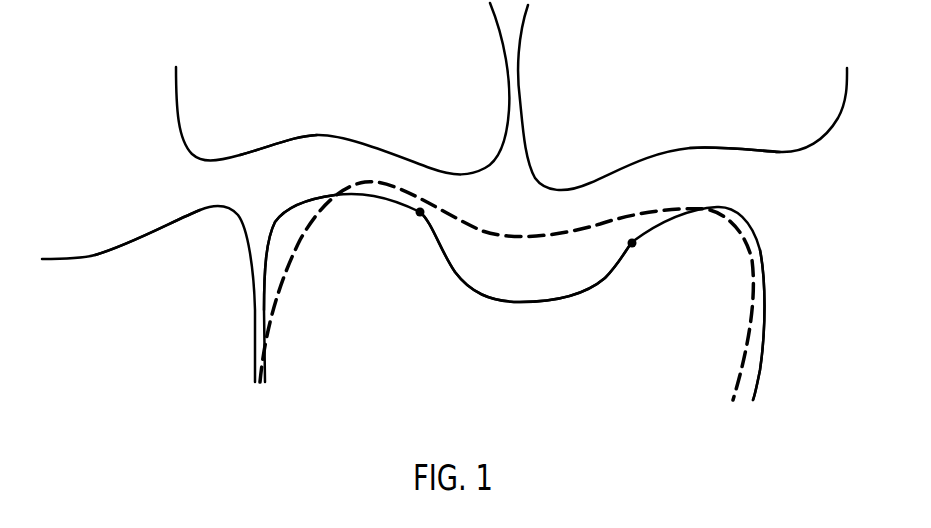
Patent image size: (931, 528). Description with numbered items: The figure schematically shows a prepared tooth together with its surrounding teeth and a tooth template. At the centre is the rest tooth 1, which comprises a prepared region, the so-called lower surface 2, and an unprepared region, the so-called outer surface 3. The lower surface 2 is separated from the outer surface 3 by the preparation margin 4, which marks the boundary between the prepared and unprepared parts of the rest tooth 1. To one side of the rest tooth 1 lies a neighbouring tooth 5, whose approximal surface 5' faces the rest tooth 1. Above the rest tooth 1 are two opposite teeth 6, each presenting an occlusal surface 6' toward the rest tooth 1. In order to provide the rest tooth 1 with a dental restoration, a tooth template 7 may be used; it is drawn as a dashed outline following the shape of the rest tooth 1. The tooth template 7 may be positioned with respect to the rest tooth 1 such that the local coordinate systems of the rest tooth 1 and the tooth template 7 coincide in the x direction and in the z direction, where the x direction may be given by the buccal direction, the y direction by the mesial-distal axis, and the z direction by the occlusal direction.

The rest tooth 1 is at (459, 374).
The lower surface 2 is at (545, 304).
The outer surface 3 is at (269, 239).
The preparation margin 4 is at (417, 216).
The neighbouring tooth 5 is at (148, 294).
The approximal surface 5' is at (136, 232).
The opposite teeth 6 is at (511, 96).
The occlusal surfaces 6' is at (510, 124).
The tooth template 7 is at (657, 207).